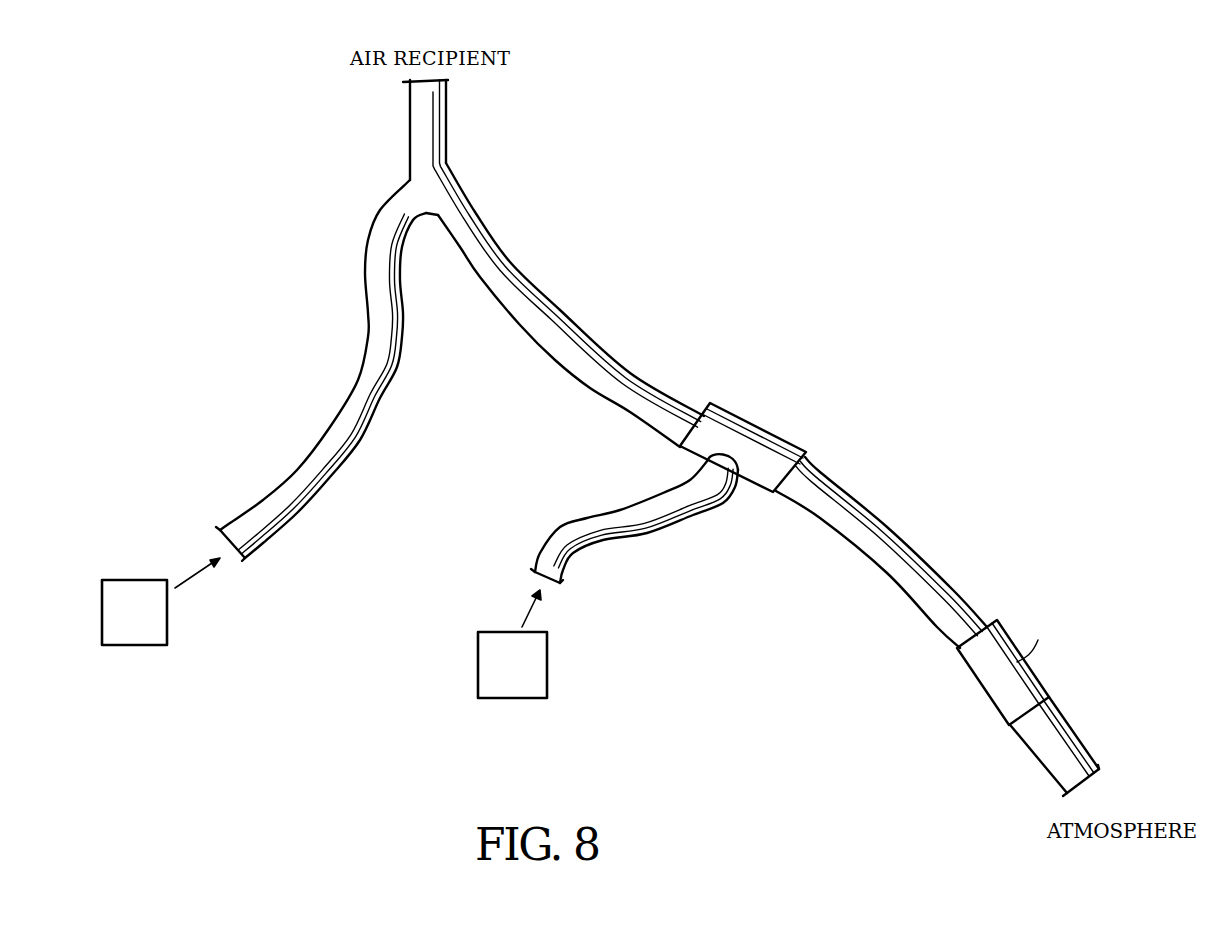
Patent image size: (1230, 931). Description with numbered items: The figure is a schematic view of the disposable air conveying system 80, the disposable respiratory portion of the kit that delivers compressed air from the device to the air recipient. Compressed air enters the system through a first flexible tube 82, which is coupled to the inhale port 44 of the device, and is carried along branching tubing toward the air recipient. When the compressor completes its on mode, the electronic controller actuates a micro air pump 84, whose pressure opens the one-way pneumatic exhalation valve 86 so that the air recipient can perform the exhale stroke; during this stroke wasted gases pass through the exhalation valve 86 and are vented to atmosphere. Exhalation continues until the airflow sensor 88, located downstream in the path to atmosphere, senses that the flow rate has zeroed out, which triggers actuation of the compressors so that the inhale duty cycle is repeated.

The inhale port 44 is at (145, 629).
The disposable air conveying system 80 is at (483, 420).
The first flexible tube 82 is at (308, 471).
The micro air pump 84 is at (523, 680).
The one-way pneumatic exhalation valve 86 is at (772, 435).
The airflow sensor 88 is at (977, 662).